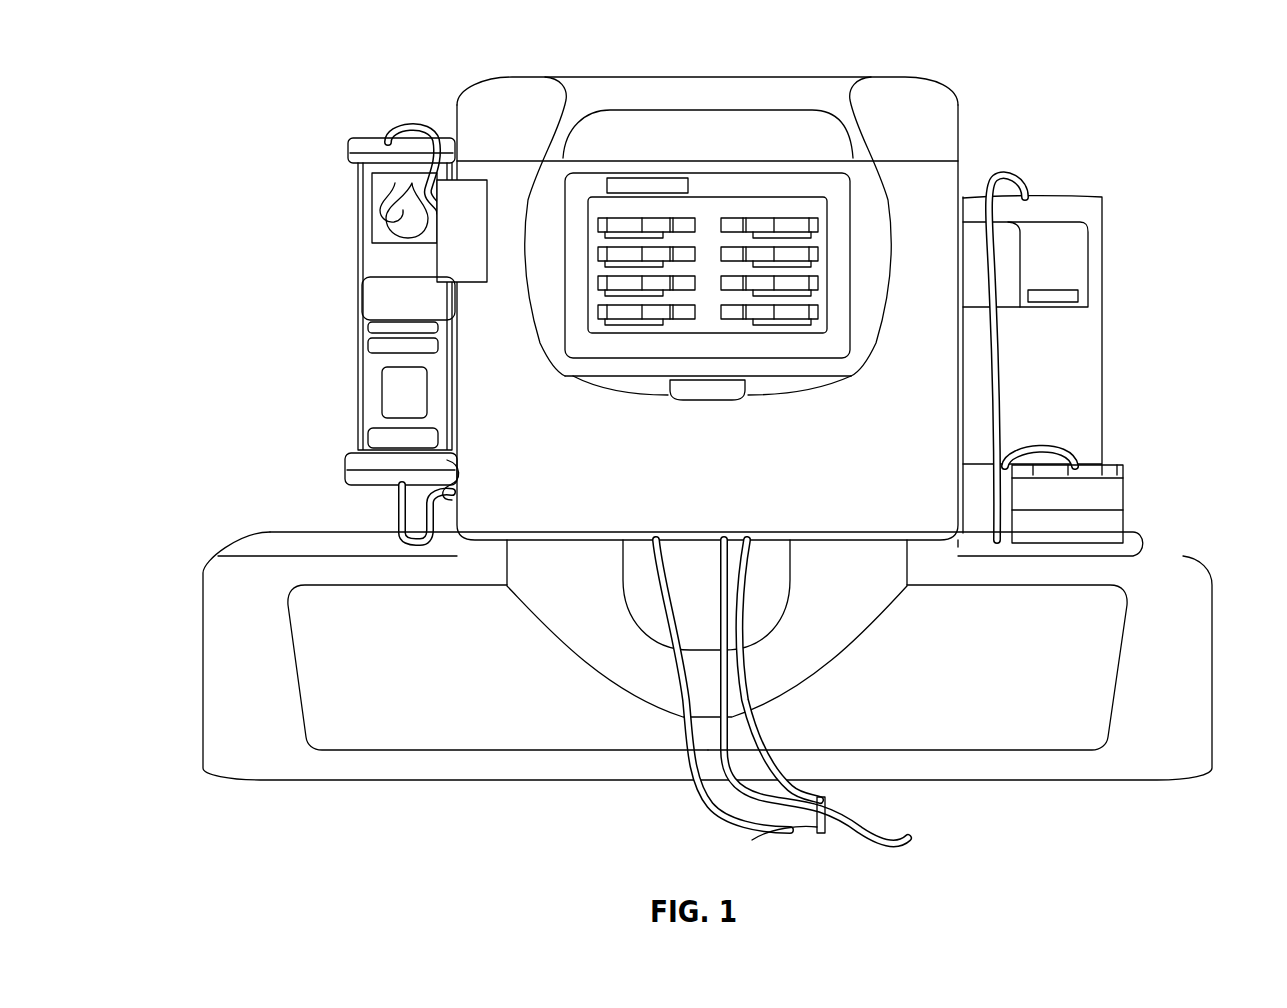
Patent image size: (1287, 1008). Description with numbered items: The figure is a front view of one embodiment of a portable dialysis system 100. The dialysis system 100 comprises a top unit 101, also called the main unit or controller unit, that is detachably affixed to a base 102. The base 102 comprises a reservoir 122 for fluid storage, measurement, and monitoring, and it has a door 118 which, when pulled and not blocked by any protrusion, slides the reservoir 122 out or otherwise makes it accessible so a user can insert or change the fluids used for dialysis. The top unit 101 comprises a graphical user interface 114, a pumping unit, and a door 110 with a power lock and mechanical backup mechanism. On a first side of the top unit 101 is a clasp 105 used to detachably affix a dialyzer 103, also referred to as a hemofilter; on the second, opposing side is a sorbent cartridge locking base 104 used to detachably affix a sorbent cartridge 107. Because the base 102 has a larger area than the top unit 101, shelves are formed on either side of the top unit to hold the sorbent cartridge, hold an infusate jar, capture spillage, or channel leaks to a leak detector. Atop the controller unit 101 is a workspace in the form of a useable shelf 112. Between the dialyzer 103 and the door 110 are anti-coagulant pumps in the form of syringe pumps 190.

The dialysis system 100 is at (186, 46).
The top unit 101 is at (627, 167).
The base 102 is at (215, 623).
The dialyzer 103 is at (358, 368).
The sorbent cartridge locking base 104 is at (1125, 498).
The clasp 105 is at (383, 303).
The sorbent cartridge 107 is at (1067, 428).
The door 110 is at (930, 195).
The shelf 112 is at (850, 38).
The graphical user interface 114 is at (562, 187).
The door 118 is at (350, 730).
The reservoir 122 is at (1018, 730).
The syringe pumps 190 is at (463, 255).